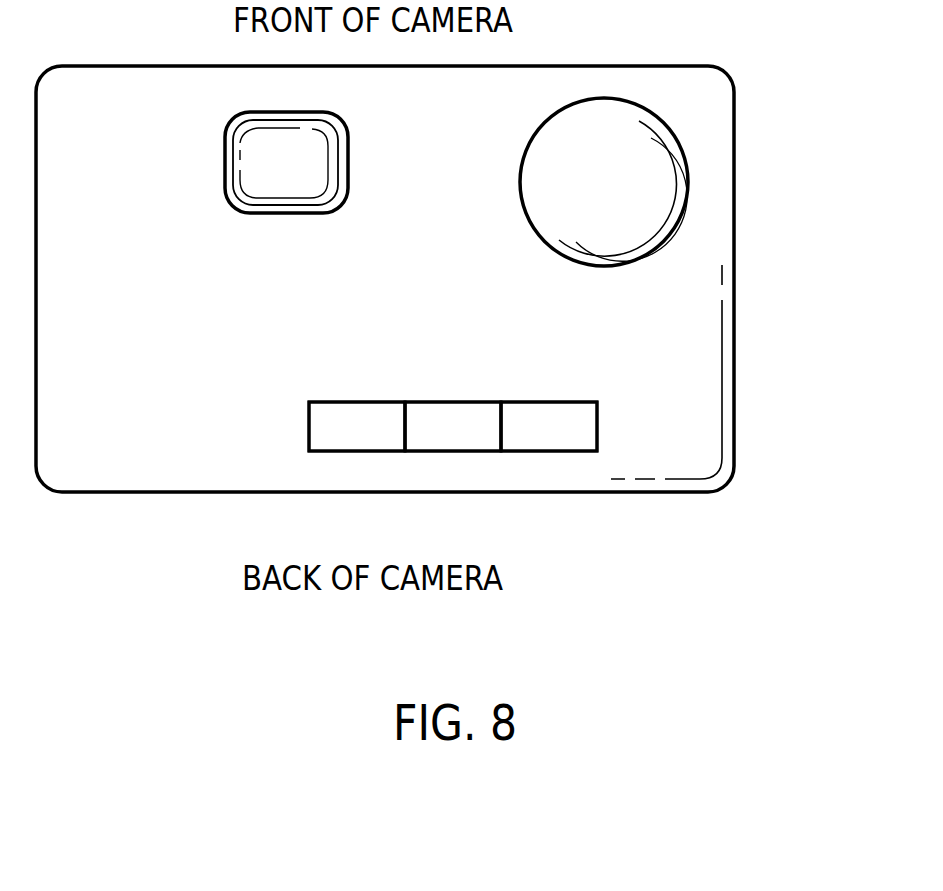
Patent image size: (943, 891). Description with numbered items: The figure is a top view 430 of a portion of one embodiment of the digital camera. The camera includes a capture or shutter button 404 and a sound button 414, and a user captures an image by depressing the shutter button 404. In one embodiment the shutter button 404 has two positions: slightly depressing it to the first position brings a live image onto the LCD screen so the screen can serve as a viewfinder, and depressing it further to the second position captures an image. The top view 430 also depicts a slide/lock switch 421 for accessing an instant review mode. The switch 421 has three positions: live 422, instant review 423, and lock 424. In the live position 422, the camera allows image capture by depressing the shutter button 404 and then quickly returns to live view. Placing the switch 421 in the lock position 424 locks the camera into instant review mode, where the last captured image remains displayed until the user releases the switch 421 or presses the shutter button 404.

The shutter button 404 is at (680, 203).
The sound button 414 is at (228, 184).
The slide/lock switch 421 is at (597, 388).
The live position 422 is at (355, 451).
The instant review position 423 is at (450, 451).
The lock position 424 is at (545, 451).
The top view 430 is at (122, 601).